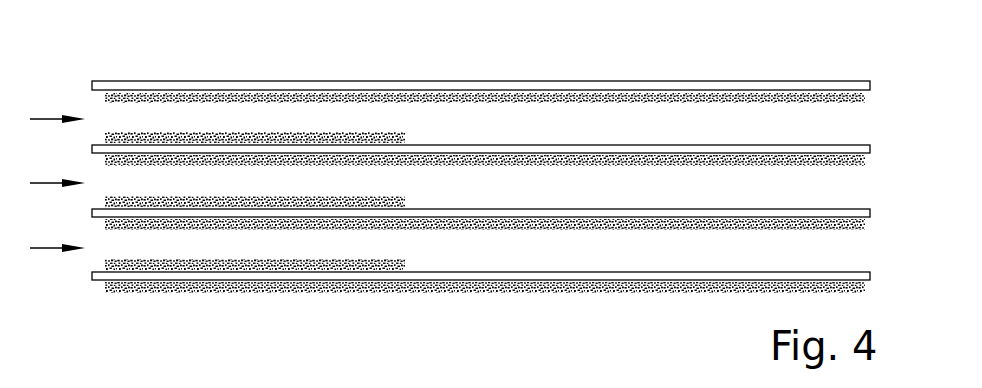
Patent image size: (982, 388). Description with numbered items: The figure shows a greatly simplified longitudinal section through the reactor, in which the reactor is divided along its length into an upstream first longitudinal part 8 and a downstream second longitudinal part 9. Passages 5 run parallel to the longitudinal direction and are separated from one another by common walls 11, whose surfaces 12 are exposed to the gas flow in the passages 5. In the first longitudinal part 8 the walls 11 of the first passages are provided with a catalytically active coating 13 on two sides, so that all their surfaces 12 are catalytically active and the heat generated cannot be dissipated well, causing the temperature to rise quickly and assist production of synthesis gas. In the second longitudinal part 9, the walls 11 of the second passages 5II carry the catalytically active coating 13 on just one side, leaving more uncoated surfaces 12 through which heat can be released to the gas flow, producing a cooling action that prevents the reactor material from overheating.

The passages 5 is at (184, 115).
The second passages 5II is at (722, 115).
The first longitudinal part 8 is at (407, 58).
The second longitudinal part 9 is at (855, 58).
The walls 11 is at (612, 155).
The surfaces 12 is at (570, 97).
The catalytically active coating 13 is at (411, 136).